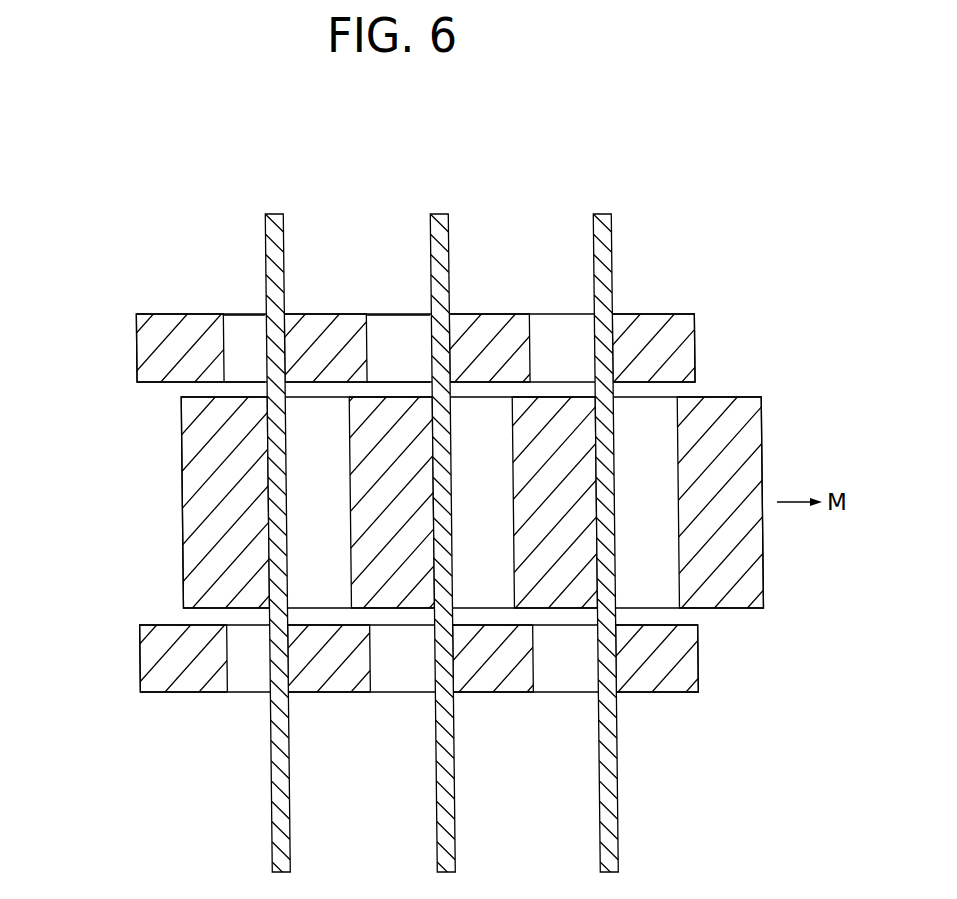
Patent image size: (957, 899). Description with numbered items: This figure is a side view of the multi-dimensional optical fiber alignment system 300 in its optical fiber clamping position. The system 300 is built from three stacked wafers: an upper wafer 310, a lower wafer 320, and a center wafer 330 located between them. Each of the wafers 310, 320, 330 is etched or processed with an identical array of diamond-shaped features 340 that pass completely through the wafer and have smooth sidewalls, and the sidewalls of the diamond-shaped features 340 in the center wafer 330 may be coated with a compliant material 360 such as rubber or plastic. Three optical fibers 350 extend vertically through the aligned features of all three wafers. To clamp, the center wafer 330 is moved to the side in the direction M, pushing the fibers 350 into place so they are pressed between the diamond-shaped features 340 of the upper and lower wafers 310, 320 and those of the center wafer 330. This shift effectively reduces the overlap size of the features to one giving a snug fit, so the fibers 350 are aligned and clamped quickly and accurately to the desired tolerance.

The multi-dimensional optical fiber alignment system 300 is at (98, 243).
The upper wafer 310 is at (137, 350).
The lower wafer 320 is at (140, 658).
The center wafer 330 is at (182, 522).
The diamond-shaped features 340 is at (395, 323).
The optical fibers 350 is at (612, 250).
The compliant material 360 is at (228, 333).